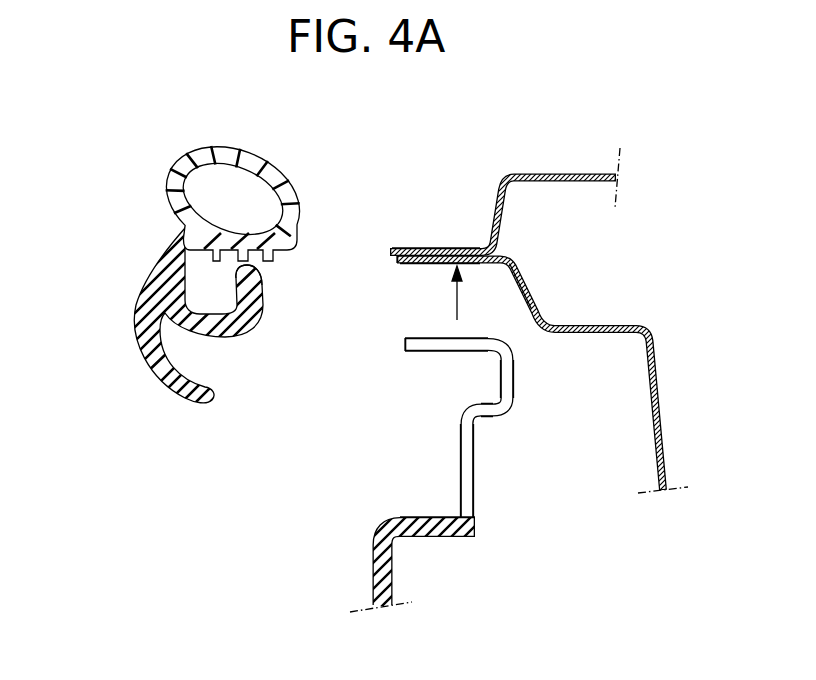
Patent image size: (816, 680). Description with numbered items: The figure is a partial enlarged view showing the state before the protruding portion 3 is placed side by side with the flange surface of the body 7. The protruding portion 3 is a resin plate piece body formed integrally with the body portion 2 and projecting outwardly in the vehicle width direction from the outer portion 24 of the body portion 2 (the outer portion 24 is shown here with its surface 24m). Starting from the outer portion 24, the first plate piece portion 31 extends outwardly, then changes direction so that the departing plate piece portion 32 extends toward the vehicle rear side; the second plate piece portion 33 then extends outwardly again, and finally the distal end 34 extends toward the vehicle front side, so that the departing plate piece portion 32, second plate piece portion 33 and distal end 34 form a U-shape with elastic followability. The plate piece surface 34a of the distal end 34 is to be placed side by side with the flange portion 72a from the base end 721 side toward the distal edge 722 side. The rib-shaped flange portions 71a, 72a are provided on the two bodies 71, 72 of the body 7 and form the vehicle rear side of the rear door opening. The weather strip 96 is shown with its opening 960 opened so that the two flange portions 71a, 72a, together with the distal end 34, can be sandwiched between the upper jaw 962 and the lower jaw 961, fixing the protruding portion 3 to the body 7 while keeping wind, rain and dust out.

The weather strip 96 is at (199, 271).
The opening 960 is at (253, 262).
The lower jaw 961 is at (240, 287).
The upper jaw 962 is at (240, 268).
The body 7 is at (500, 291).
The body 71 is at (505, 170).
The flange portion 71a is at (433, 247).
The body 72 is at (500, 314).
The base end 721 is at (502, 262).
The distal edge 722 is at (395, 268).
The flange portion 72a is at (422, 266).
The protruding portion 3 is at (464, 425).
The first plate piece portion 31 is at (463, 460).
The departing plate piece portion 32 is at (490, 417).
The second plate piece portion 33 is at (507, 372).
The distal end 34 is at (437, 349).
The plate piece surface 34a is at (447, 337).
The body portion 2 is at (450, 545).
The outer portion 24 is at (450, 542).
The mounting surface of body panel 24m is at (475, 527).